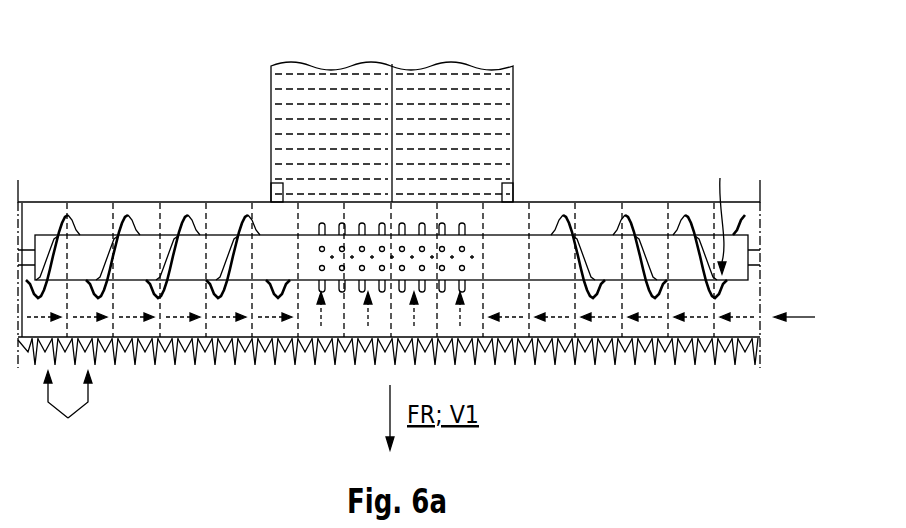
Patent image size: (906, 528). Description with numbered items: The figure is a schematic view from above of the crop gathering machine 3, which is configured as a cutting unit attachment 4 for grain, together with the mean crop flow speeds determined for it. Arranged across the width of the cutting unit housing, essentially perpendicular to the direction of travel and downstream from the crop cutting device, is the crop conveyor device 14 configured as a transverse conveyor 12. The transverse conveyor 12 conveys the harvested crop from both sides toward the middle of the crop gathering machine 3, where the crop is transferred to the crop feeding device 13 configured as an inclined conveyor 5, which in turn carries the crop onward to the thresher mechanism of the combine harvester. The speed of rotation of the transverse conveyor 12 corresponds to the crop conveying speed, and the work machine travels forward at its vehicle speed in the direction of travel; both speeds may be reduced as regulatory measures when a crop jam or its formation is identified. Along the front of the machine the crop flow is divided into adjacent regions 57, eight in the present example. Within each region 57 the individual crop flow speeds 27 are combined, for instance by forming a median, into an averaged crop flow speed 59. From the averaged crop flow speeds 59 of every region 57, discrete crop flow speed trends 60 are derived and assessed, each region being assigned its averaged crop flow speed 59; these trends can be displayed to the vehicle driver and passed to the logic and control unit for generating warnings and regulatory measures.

The crop gathering machine 3 is at (417, 240).
The cutting unit attachment 4 is at (143, 96).
The inclined conveyor 5 is at (441, 132).
The crop feeding device 13 is at (490, 145).
The transverse conveyor 12 is at (389, 223).
The crop conveyor device 14 is at (600, 247).
The crop flow speeds 27 is at (388, 374).
The averaged crop flow speed 59 is at (200, 345).
The regions 57 is at (68, 418).
The discrete crop flow speed trends 60 is at (800, 322).